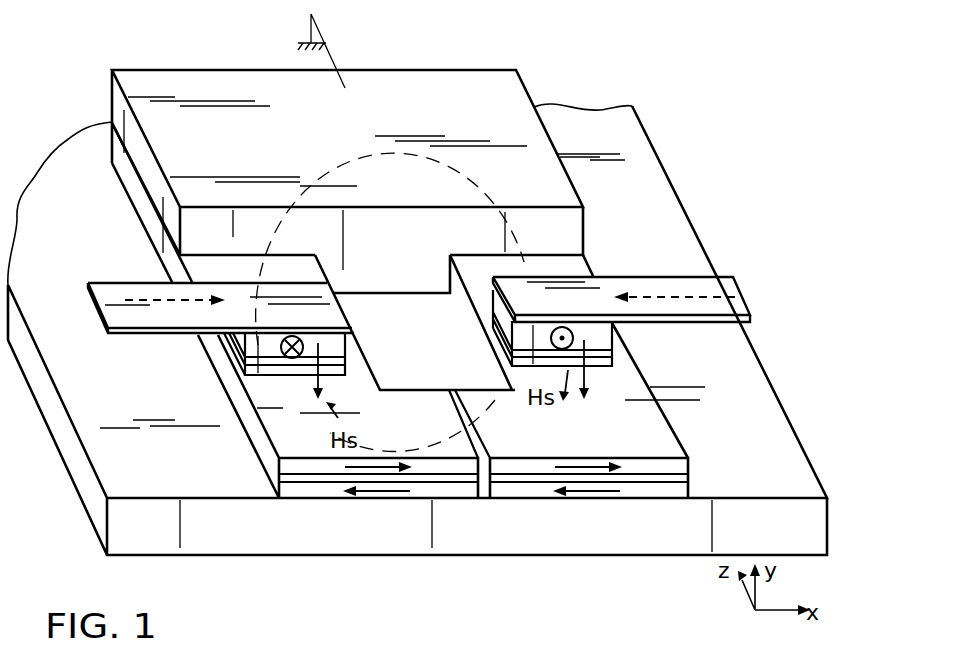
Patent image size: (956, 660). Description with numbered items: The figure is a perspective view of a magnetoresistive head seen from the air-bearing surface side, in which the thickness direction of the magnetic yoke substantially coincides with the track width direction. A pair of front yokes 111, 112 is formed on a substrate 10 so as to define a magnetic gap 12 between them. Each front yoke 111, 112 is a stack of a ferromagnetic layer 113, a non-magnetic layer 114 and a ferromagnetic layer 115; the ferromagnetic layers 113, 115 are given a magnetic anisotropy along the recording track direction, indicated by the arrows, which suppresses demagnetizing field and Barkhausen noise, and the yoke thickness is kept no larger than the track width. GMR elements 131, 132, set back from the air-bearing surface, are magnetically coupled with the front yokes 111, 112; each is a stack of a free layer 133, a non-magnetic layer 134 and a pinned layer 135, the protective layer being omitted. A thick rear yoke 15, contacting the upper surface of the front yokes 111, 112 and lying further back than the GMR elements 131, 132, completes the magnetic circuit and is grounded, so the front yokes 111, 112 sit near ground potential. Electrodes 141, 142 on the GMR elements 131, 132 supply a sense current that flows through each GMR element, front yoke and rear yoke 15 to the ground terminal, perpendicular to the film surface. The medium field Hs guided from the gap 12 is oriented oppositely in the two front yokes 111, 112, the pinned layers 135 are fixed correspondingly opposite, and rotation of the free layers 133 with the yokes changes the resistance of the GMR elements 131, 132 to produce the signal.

The substrate 10 is at (384, 545).
The magnetic gap 12 is at (480, 499).
The rear yoke 15 is at (420, 80).
The front yoke 111 is at (322, 499).
The front yoke 112 is at (531, 499).
The ferromagnetic layer 113 is at (690, 490).
The non-magnetic layer 114 is at (690, 476).
The ferromagnetic layer 115 is at (690, 458).
The GMR element 131 is at (227, 350).
The GMR element 132 is at (613, 338).
The free layer 133 is at (498, 349).
The non-magnetic layer 134 is at (497, 334).
The pinned layer 135 is at (493, 306).
The electrode 141 is at (122, 289).
The electrode 142 is at (645, 283).